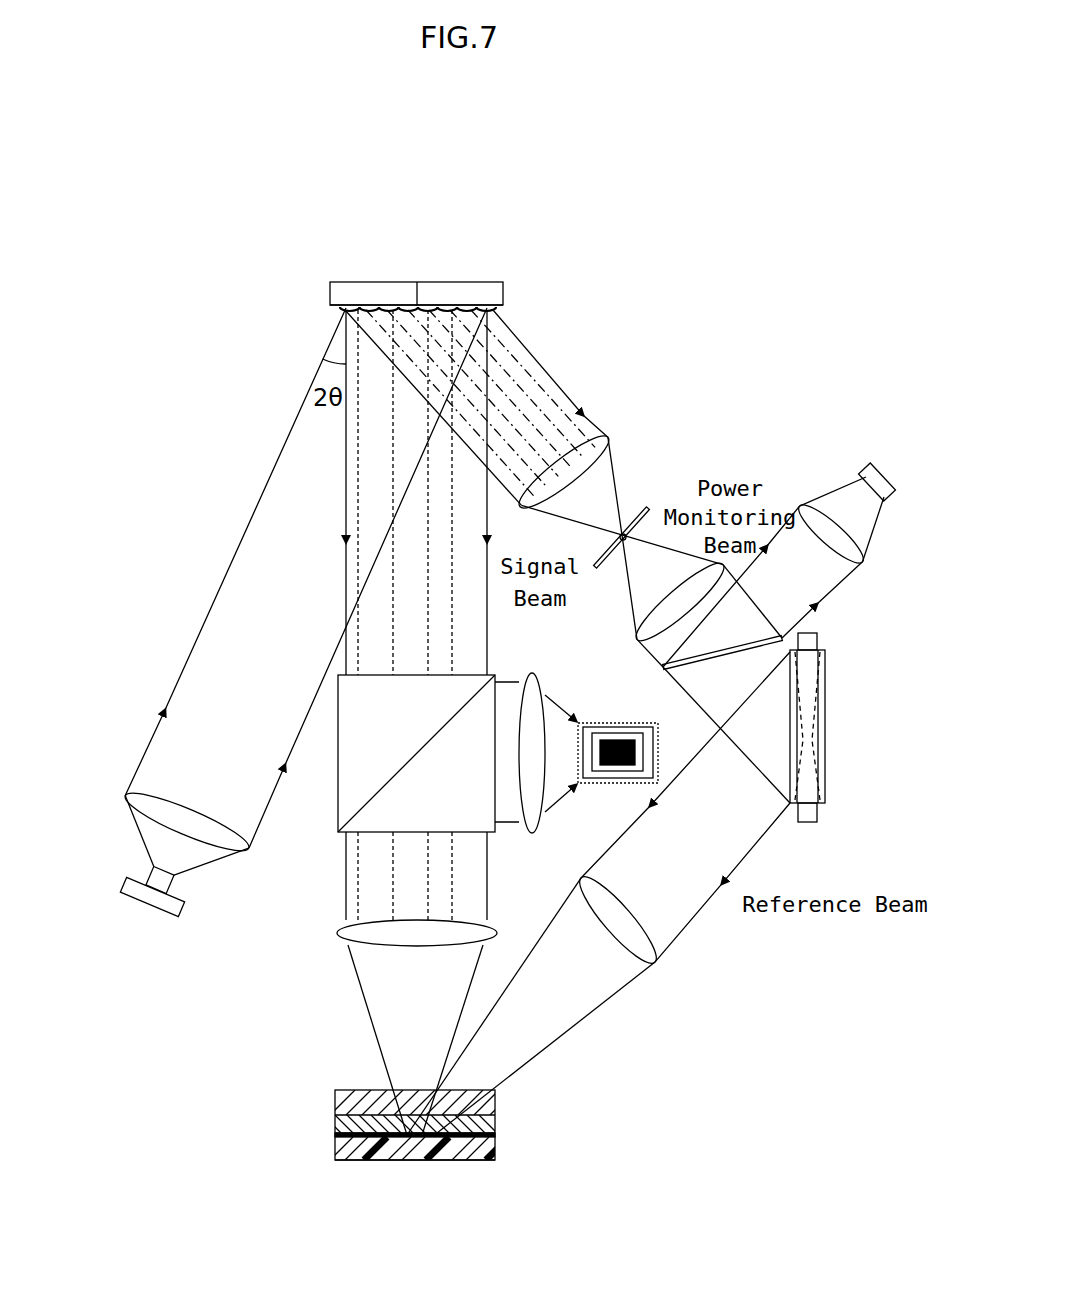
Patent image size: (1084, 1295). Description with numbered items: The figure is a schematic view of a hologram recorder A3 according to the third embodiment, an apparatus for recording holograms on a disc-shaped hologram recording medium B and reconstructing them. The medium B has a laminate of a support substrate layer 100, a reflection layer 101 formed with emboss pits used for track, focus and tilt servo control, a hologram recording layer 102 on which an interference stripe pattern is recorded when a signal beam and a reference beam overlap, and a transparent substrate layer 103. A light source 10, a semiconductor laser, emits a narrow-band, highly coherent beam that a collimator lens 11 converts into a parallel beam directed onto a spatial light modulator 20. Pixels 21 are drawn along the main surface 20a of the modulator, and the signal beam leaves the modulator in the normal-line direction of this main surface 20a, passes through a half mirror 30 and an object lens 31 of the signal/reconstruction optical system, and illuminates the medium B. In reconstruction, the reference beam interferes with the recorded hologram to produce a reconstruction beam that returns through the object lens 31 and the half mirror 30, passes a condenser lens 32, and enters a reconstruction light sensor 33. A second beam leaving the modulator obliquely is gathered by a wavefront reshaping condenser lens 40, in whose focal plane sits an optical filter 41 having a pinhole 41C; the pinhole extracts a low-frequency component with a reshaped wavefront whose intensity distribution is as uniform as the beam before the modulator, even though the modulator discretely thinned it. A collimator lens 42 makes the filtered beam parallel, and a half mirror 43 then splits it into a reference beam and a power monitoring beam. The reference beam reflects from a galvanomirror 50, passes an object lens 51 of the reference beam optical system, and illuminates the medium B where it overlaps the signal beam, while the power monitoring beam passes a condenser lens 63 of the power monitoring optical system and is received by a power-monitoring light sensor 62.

The hologram recorder A3 is at (476, 216).
The light source 10 is at (130, 893).
The collimator lens 11 is at (128, 800).
The spatial light modulator 20 is at (358, 290).
The main surface 20a is at (500, 311).
The pixels 21 is at (366, 313).
The half mirror 30 is at (338, 830).
The object lens 31 is at (340, 935).
The condenser lens 32 is at (540, 832).
The reconstruction light sensor 33 is at (600, 785).
The condenser lens 40 is at (605, 440).
The optical filter 41 is at (598, 568).
The pinhole 41C is at (626, 538).
The collimator lens 42 is at (643, 638).
The half mirror 43 is at (664, 670).
The galvanomirror 50 is at (826, 651).
The object lens 51 is at (656, 963).
The power-monitoring light sensor 62 is at (882, 470).
The condenser lens 63 is at (801, 507).
The hologram recording medium B is at (310, 1125).
The support substrate layer 100 is at (490, 1152).
The reflection layer 101 is at (487, 1136).
The hologram recording layer 102 is at (486, 1126).
The transparent substrate layer 103 is at (488, 1103).